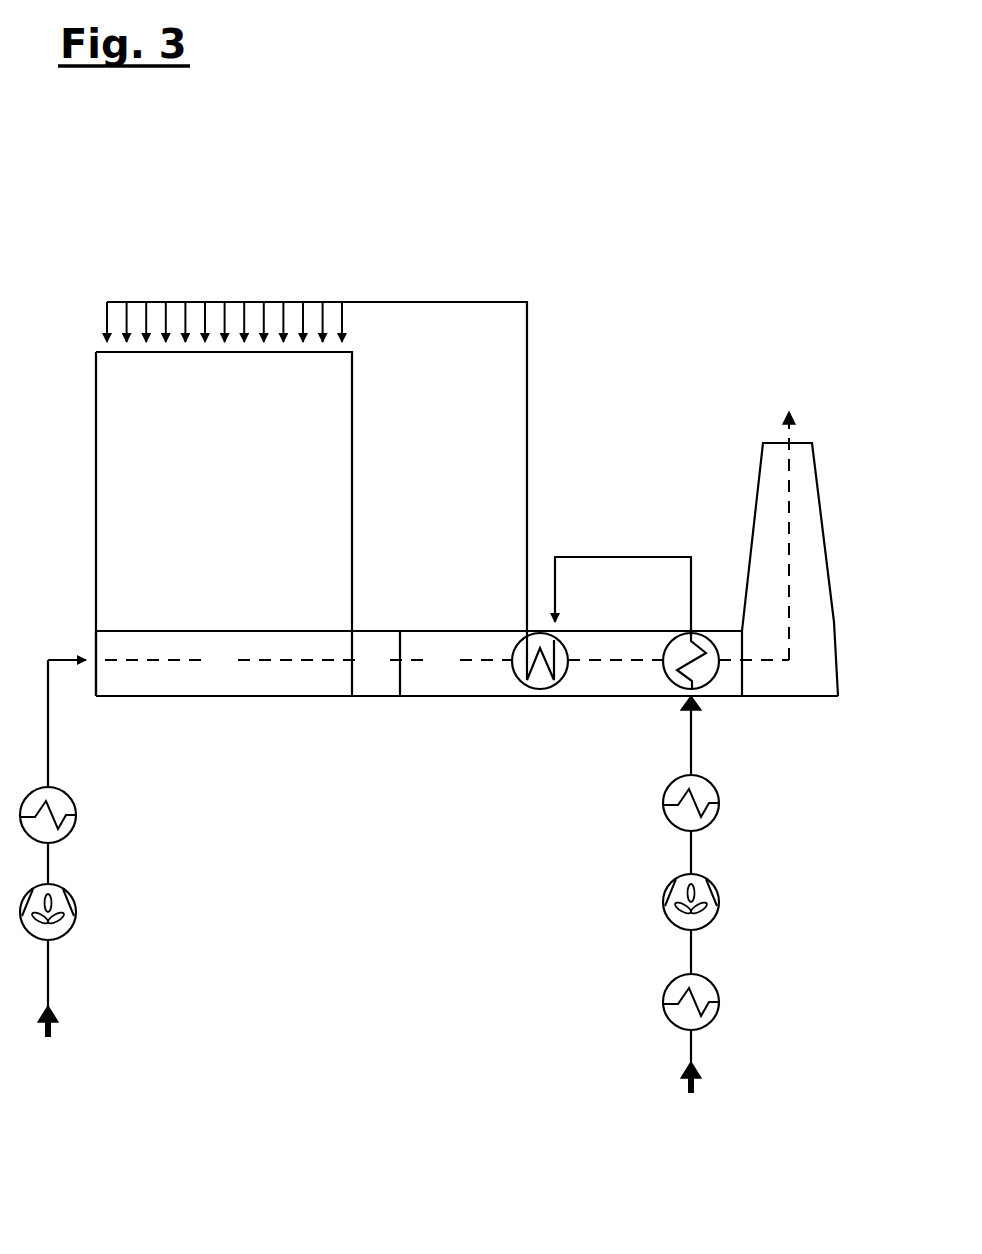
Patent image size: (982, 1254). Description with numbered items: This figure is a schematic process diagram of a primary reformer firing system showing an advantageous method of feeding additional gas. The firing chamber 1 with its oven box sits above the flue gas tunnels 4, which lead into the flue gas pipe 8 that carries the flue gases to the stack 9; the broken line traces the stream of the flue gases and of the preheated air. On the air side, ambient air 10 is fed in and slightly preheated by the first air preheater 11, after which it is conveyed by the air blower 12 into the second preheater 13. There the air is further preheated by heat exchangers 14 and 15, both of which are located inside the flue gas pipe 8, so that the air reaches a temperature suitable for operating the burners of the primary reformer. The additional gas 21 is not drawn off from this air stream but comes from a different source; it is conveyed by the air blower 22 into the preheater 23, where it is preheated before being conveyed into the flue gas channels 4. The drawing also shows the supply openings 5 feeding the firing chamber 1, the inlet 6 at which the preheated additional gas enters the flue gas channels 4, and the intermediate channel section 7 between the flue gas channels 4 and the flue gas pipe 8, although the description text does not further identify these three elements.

The firing chamber 1 is at (224, 524).
The flue gas tunnels 4 is at (467, 663).
The supply air inlets 5 is at (342, 325).
The fresh air inlet 6 is at (96, 662).
The channel section 7 is at (397, 663).
The flue gas pipe 8 is at (611, 666).
The stack 9 is at (812, 486).
The ambient air 10 is at (693, 1102).
The first air preheater 11 is at (663, 1006).
The air blower 12 is at (663, 902).
The second preheater 13 is at (663, 810).
The heat exchanger 14 is at (676, 640).
The heat exchanger 15 is at (522, 645).
The additional gas 21 is at (43, 1046).
The air blower 22 is at (76, 912).
The preheater 23 is at (76, 817).